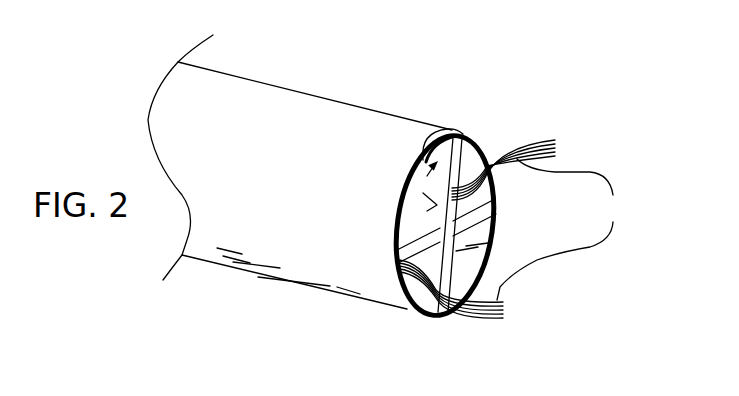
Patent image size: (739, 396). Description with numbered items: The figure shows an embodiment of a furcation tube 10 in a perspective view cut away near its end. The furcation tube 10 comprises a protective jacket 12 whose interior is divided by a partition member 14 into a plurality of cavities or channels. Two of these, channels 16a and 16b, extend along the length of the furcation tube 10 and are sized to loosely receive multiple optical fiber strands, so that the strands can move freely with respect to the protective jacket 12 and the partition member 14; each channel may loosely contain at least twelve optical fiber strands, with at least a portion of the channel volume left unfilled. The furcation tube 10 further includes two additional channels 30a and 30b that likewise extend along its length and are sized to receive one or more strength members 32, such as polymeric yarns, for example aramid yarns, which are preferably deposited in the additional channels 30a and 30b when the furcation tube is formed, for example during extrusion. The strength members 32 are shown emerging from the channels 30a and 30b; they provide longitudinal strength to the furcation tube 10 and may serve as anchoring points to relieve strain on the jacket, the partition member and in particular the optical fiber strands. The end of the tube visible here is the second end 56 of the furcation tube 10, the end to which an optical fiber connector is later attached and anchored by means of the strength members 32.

The furcation tube 10 is at (203, 315).
The protective jacket 12 is at (394, 131).
The partition member 14 is at (457, 138).
The channel 16a is at (440, 222).
The channel 16b is at (493, 229).
The additional channel 30a is at (483, 152).
The additional channel 30b is at (445, 314).
The strength members 32 is at (563, 229).
The second end 56 is at (321, 86).